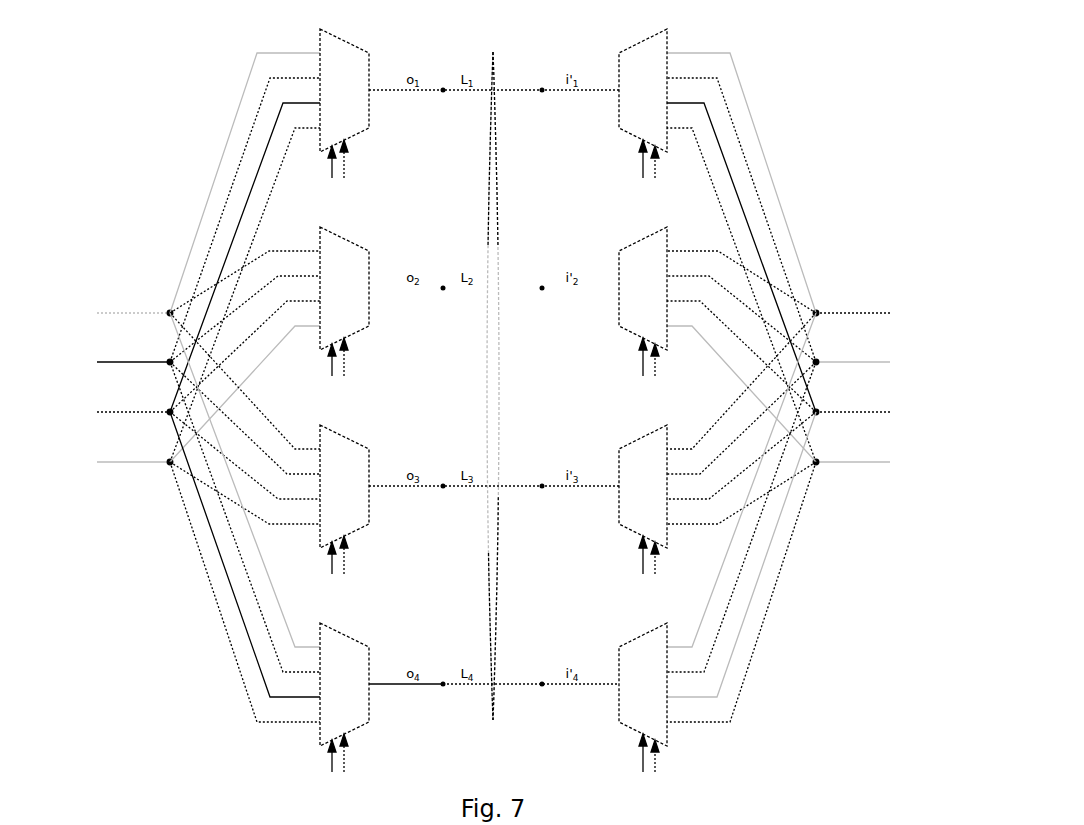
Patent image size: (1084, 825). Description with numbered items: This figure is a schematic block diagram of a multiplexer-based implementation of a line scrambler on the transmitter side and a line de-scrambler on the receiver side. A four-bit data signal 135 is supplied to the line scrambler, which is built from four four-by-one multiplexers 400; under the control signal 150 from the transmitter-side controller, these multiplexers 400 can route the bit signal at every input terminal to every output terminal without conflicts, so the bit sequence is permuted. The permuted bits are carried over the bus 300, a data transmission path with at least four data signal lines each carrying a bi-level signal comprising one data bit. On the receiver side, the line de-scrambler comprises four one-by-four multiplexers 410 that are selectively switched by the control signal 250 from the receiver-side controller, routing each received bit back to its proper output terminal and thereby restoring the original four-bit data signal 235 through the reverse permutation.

The 4-bit input signal 135 is at (118, 380).
The 4-bit output signal 235 is at (869, 380).
The control signal 150 is at (338, 470).
The control signal 250 is at (649, 470).
The bus 300 is at (493, 401).
The input optical switch (1x4 multiplexer) 400 is at (344, 387).
The output optical switch (4x1 demultiplexer) 410 is at (643, 387).